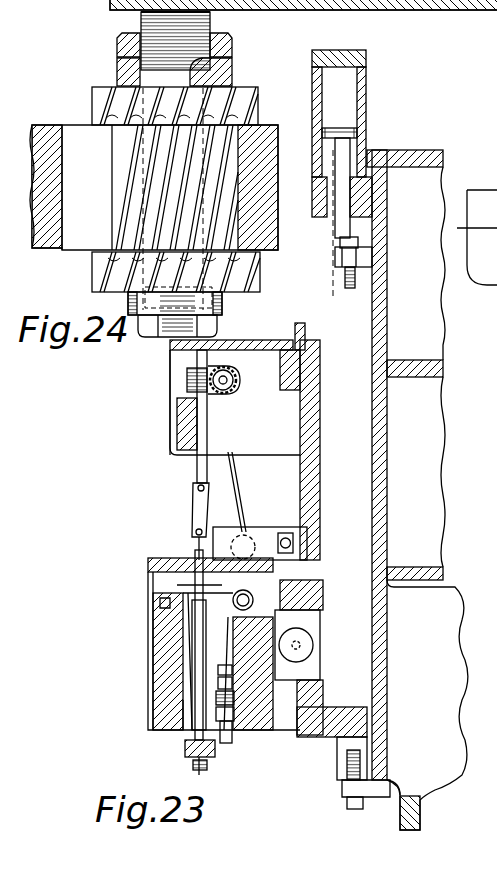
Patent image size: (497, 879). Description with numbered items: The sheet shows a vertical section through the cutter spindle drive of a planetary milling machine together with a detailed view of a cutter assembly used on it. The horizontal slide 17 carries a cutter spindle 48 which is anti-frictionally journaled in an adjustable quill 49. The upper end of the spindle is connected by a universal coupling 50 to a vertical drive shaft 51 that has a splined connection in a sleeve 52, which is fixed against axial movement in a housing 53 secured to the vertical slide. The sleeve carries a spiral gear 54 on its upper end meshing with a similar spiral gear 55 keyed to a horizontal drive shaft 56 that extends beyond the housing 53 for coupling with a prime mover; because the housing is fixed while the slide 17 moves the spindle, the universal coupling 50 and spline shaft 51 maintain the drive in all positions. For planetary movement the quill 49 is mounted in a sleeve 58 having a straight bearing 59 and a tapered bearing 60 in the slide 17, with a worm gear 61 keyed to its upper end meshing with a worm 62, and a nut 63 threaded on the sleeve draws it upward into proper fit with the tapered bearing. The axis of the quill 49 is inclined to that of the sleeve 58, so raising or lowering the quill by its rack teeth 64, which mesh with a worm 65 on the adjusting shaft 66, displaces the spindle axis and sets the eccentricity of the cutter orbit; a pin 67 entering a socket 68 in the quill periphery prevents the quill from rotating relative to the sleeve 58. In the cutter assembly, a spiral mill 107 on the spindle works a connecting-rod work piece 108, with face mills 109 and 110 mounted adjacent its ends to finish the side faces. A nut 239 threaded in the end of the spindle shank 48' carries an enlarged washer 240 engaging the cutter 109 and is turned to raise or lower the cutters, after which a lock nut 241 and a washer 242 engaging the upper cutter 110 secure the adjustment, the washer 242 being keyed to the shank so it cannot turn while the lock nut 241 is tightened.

In FIG. 23, the horizontal slide 17 is at (400, 9).
In FIG. 23, the cutter spindle 48 is at (171, 662).
In FIG. 24, the spindle shank 48' is at (201, 41).
In FIG. 23, the adjustable quill 49 is at (192, 712).
In FIG. 23, the universal coupling 50 is at (192, 505).
In FIG. 23, the vertical drive shaft 51 is at (197, 468).
In FIG. 23, the sleeve 52 is at (193, 430).
In FIG. 23, the housing 53 is at (170, 387).
In FIG. 23, the spiral gear 54 is at (187, 378).
In FIG. 23, the spiral gear 55 is at (237, 380).
In FIG. 23, the horizontal drive shaft 56 is at (230, 394).
In FIG. 23, the sleeve 58 is at (188, 633).
In FIG. 23, the straight bearing 59 is at (183, 628).
In FIG. 23, the tapered bearing 60 is at (183, 705).
In FIG. 23, the worm gear 61 is at (160, 600).
In FIG. 23, the worm 62 is at (247, 590).
In FIG. 23, the nut 63 is at (177, 585).
In FIG. 23, the rack teeth 64 is at (234, 698).
In FIG. 23, the worm 65 is at (234, 712).
In FIG. 23, the adjusting shaft 66 is at (232, 740).
In FIG. 23, the pin 67 is at (232, 683).
In FIG. 23, the socket 68 is at (232, 670).
In FIG. 24, the spiral mill 107 is at (110, 235).
In FIG. 24, the work piece 108 is at (40, 125).
In FIG. 24, the face mill 109 is at (260, 280).
In FIG. 24, the face mill 110 is at (258, 105).
In FIG. 24, the nut 239 is at (217, 327).
In FIG. 24, the enlarged washer 240 is at (222, 306).
In FIG. 24, the lock nut 241 is at (232, 47).
In FIG. 24, the washer 242 is at (232, 74).